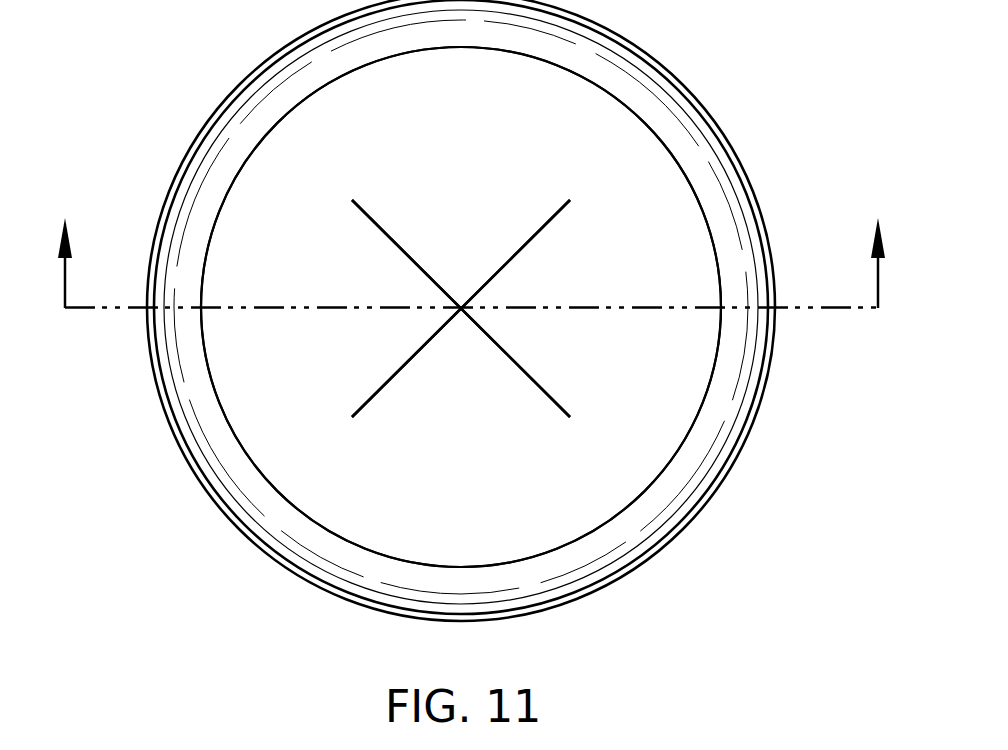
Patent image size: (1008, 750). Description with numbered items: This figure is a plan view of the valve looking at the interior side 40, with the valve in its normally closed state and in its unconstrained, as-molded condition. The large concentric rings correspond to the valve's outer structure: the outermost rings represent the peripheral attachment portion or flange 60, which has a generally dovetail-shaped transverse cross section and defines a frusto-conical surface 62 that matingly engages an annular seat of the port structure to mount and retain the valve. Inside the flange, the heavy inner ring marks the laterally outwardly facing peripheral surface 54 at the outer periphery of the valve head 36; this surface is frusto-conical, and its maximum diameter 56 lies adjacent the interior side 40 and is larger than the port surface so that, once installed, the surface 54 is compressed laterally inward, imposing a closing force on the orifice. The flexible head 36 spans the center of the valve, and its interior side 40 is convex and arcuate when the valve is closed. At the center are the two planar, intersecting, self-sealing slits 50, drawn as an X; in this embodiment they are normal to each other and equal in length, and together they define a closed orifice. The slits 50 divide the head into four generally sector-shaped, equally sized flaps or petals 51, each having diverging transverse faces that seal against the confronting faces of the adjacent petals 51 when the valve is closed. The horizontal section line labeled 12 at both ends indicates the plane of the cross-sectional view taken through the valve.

The section line 12- 12 is at (471, 243).
The head 36 is at (605, 142).
The interior side 40 is at (562, 98).
The self-sealing slits 50 is at (555, 407).
The flaps or petals 51 is at (397, 282).
The peripheral surface 54 is at (678, 455).
The maximum diameter 56 is at (461, 307).
The peripheral attachment portion or flange 60 is at (783, 413).
The frusto-conical surface 62 is at (695, 153).